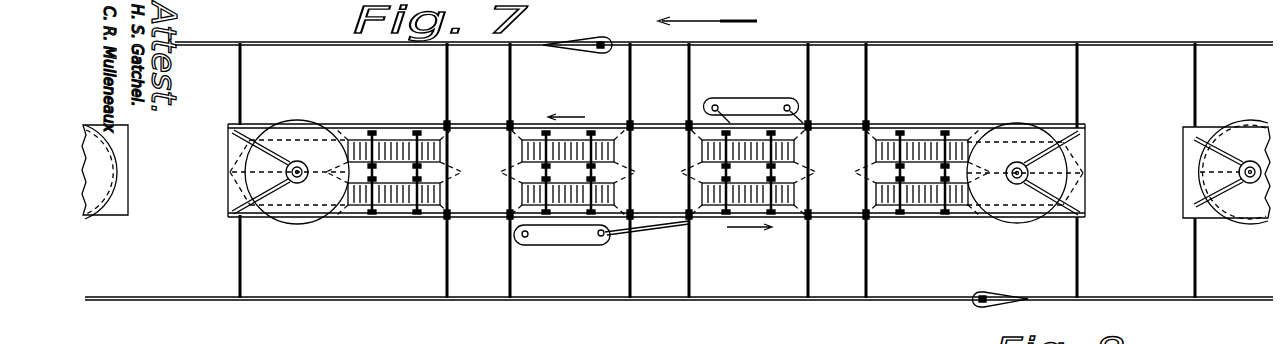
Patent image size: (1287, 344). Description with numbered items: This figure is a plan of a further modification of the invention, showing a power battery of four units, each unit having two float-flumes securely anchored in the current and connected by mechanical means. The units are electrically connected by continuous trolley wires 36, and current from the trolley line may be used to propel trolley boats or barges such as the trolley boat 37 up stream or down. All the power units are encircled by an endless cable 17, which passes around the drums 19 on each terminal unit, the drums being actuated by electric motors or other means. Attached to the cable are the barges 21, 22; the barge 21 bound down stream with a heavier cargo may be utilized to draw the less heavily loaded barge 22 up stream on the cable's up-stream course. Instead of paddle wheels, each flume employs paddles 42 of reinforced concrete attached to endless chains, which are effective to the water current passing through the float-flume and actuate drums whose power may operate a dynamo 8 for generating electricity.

The dynamo 8 is at (923, 204).
The endless cable 17 is at (919, 124).
The drum 19 is at (290, 208).
The barge 21 is at (745, 104).
The barge 22 is at (568, 248).
The trolley wire 36 is at (1035, 36).
The trolley boat 37 is at (572, 42).
The paddle 42 is at (658, 179).